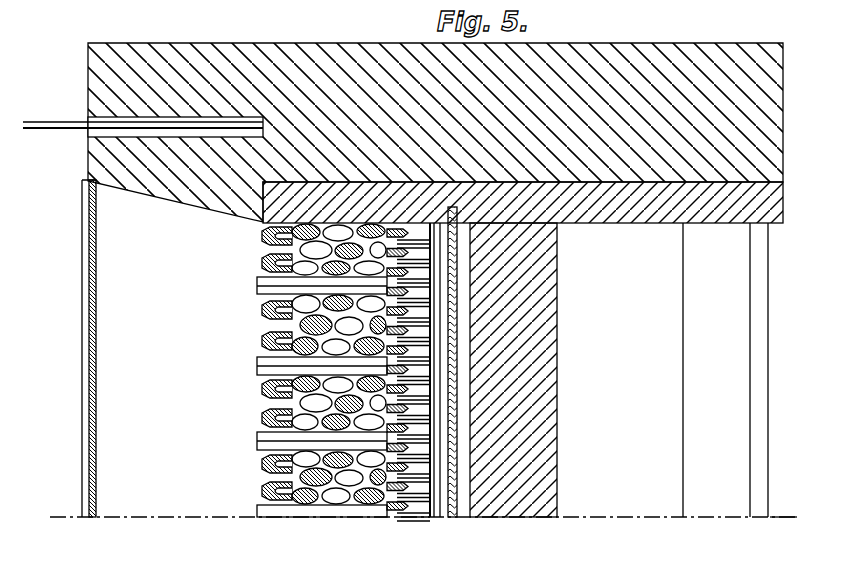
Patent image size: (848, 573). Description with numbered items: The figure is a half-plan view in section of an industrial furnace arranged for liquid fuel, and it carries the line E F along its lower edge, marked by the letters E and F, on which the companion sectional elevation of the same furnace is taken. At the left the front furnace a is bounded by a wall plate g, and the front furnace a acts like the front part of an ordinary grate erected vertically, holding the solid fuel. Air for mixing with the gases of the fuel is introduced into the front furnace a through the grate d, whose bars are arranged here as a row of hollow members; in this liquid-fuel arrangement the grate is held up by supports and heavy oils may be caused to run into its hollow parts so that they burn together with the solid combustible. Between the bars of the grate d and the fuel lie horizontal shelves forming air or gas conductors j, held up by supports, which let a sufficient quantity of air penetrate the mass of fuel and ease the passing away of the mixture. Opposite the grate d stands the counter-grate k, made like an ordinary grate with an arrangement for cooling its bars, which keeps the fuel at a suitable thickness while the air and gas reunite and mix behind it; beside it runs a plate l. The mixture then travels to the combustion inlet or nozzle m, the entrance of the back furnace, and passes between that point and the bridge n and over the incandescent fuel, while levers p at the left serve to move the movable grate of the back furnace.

The levers p is at (143, 118).
The side wall plate g is at (96, 436).
The air or gas conductors j is at (322, 396).
The grate d is at (268, 240).
The front furnace a is at (300, 323).
The counter-grate k is at (395, 530).
The partition plate l is at (428, 514).
The combustion inlet or nozzle m is at (445, 512).
The bridge n is at (725, 370).
The section line E F E is at (423, 504).
The section line E F is at (783, 505).